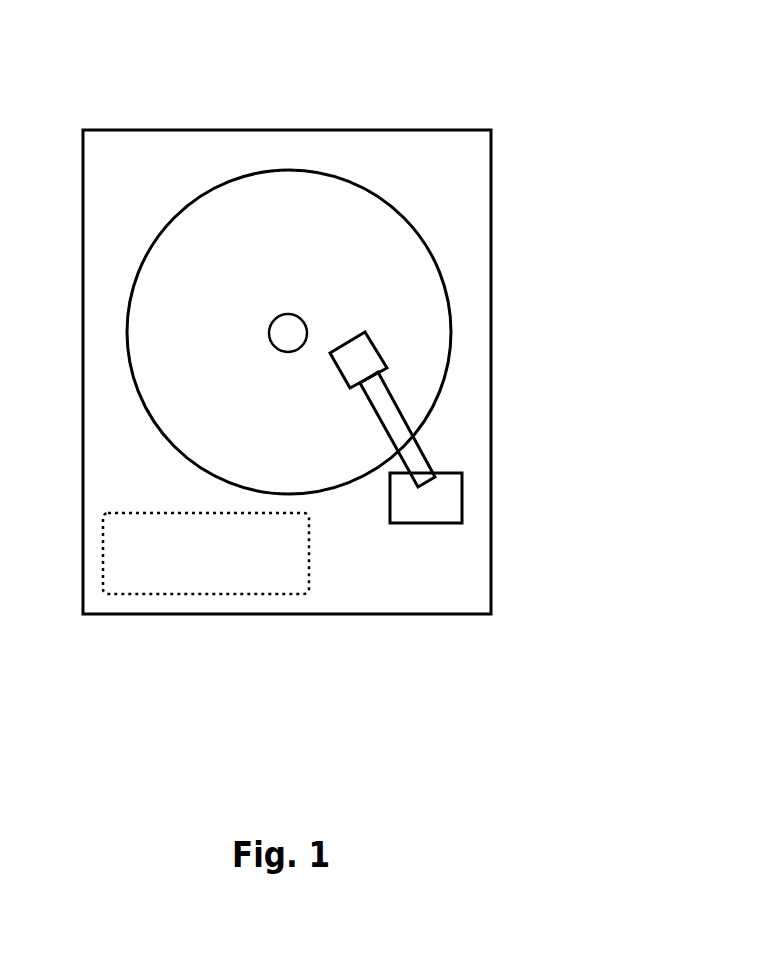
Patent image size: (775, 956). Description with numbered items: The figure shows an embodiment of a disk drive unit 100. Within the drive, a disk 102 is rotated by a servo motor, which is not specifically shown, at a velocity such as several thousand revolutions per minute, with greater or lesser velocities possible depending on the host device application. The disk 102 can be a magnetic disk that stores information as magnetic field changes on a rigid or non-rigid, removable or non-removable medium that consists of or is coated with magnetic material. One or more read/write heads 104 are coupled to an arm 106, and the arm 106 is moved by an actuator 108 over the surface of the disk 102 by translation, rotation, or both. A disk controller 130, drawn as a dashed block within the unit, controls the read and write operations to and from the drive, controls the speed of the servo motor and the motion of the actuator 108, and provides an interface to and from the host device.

The disk drive unit 100 is at (533, 92).
The disk 102 is at (185, 208).
The read/write head 104 is at (404, 358).
The arm 106 is at (405, 414).
The actuator 108 is at (390, 507).
The disk controller 130 is at (206, 553).